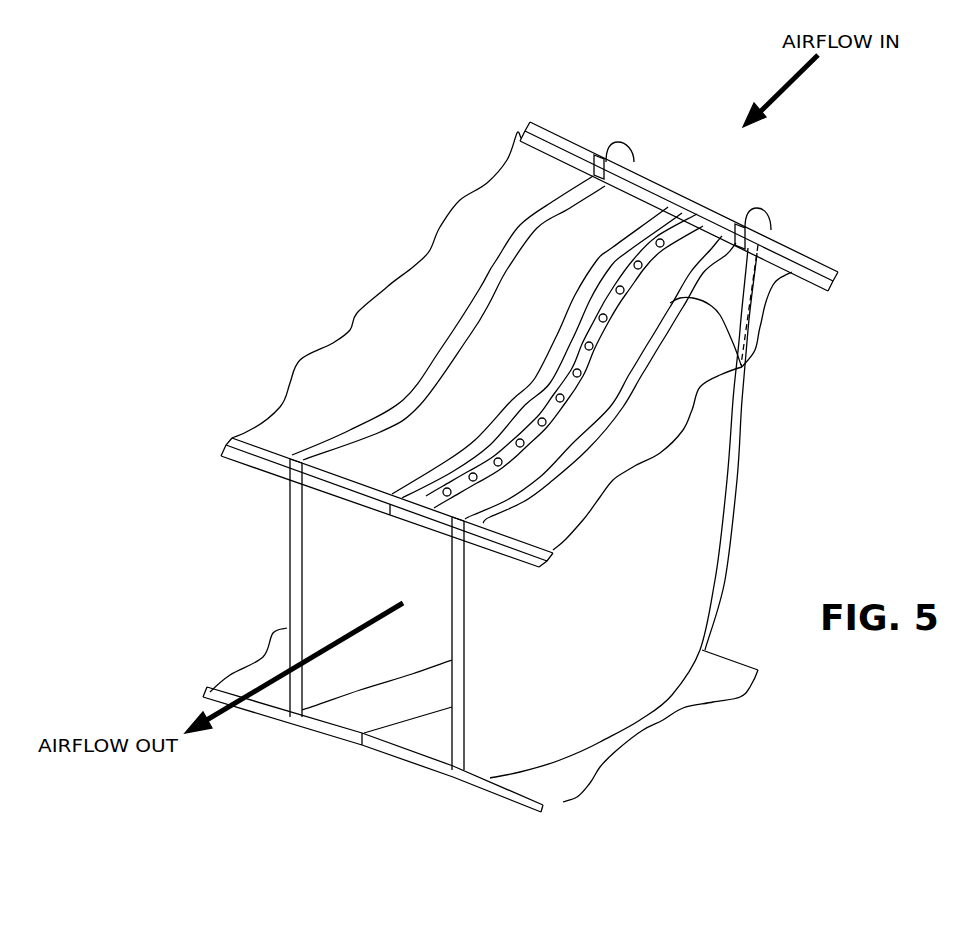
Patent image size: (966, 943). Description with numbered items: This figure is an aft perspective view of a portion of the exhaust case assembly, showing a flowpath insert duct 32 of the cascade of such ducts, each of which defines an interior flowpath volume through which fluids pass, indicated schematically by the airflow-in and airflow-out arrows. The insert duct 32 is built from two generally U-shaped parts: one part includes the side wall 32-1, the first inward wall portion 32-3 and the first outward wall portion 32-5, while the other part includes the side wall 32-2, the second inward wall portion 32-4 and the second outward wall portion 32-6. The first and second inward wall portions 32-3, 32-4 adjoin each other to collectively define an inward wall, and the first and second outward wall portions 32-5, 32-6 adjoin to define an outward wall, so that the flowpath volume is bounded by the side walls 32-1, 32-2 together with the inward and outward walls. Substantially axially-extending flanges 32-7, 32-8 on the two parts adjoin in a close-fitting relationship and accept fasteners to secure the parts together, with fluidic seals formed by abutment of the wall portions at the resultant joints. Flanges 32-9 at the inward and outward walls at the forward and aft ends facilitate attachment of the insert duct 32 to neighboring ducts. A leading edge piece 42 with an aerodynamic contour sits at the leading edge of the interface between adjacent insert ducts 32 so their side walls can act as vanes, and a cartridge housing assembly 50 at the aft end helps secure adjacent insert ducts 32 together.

The flowpath insert duct 32 is at (536, 172).
The side wall 32-1 is at (683, 513).
The side wall 32-2 is at (742, 367).
The first inward wall portion 32-3 is at (352, 712).
The second inward wall portion 32-4 is at (247, 677).
The first outward wall portion 32-5 is at (403, 427).
The second outward wall portion 32-6 is at (410, 290).
The axially-extending flange 32-7 is at (707, 223).
The axially-extending flange 32-8 is at (708, 218).
The flange 32-9 is at (724, 213).
The leading edge piece 42 is at (617, 143).
The cartridge housing assembly 50 is at (289, 586).